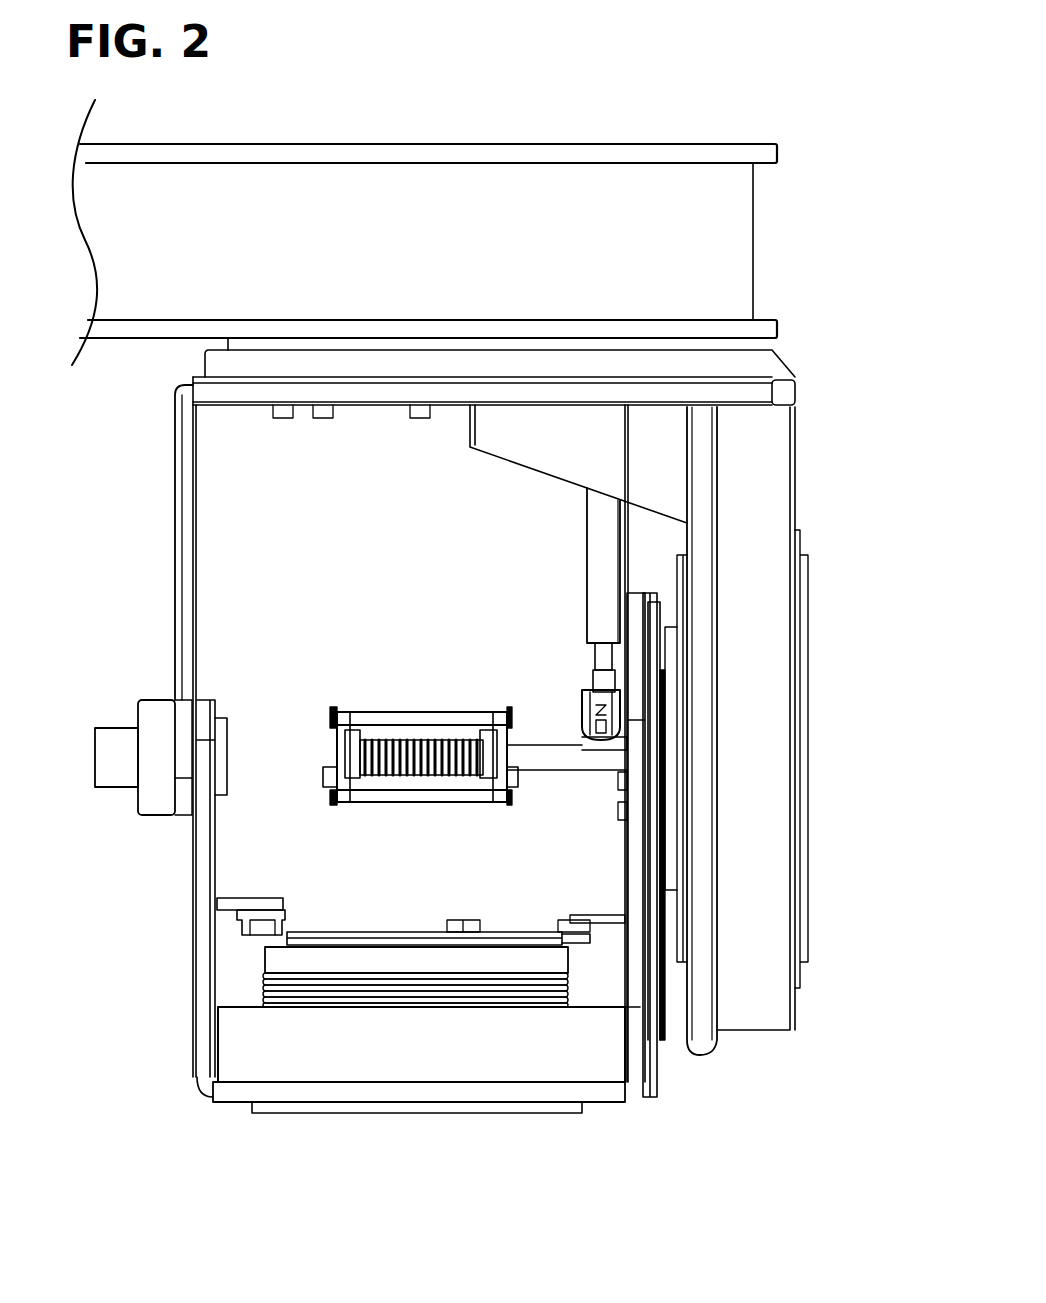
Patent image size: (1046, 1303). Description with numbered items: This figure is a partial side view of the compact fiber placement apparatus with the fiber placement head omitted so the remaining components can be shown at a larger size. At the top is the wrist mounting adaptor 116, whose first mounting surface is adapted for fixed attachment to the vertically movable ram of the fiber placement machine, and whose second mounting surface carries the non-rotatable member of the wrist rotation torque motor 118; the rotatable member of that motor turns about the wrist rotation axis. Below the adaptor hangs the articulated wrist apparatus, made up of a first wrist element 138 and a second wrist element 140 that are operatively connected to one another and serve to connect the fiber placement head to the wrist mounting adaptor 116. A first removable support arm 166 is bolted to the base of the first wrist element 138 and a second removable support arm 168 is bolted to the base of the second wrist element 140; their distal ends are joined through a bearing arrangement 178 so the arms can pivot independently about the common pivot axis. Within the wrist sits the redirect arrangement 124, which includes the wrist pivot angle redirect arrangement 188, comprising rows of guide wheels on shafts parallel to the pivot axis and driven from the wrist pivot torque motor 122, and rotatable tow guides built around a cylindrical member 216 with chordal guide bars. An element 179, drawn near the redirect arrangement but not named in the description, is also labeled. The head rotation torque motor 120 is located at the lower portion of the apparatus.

The wrist mounting adaptor 116 is at (740, 216).
The wrist rotation torque motor 118 is at (339, 197).
The first wrist element 138 is at (780, 447).
The first removable support arm 166 is at (185, 522).
The actuator rod 179 is at (605, 543).
The redirect arrangement 124 is at (475, 747).
The wrist pivot torque motor 122 is at (765, 698).
The bearing arrangement 178 is at (98, 752).
The wrist pivot angle redirect arrangement 188 is at (445, 800).
The cylindrical member 216 is at (347, 930).
The second removable support arm 168 is at (207, 902).
The head rotation torque motor 120 is at (270, 953).
The second wrist element 140 is at (658, 1078).